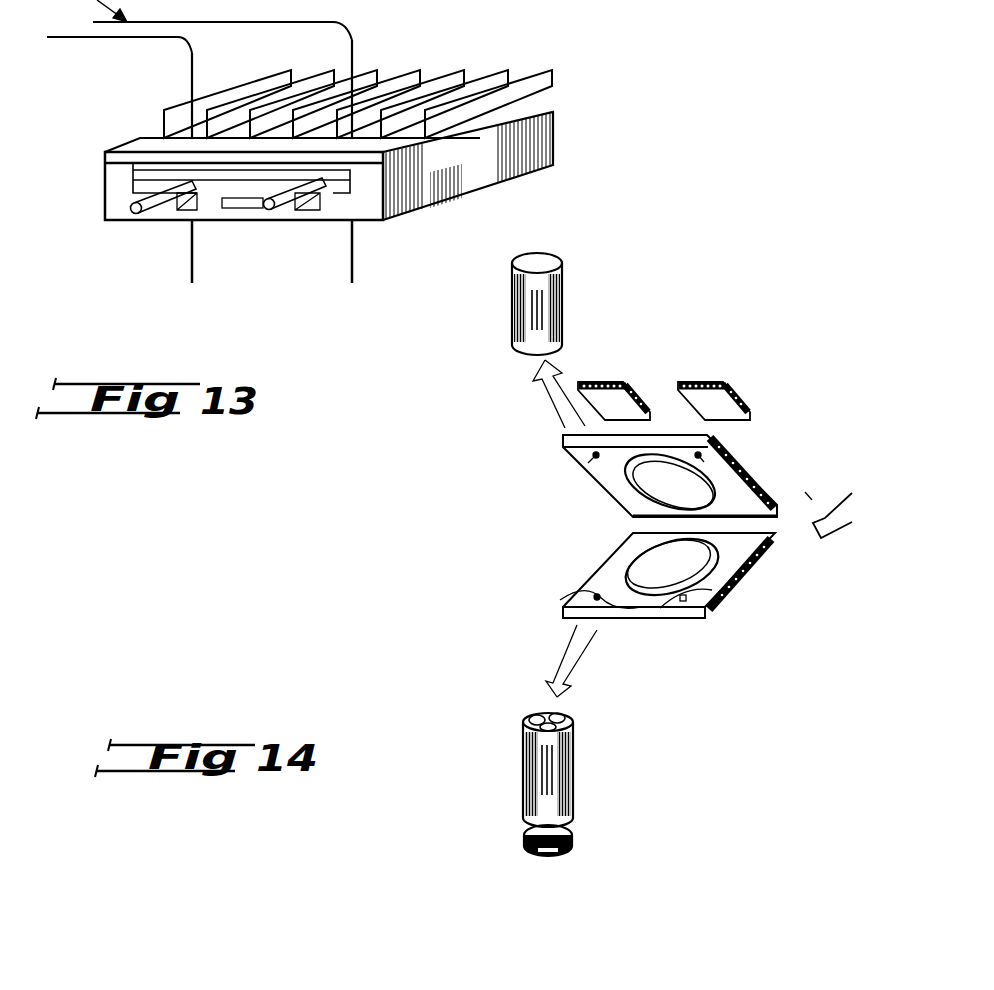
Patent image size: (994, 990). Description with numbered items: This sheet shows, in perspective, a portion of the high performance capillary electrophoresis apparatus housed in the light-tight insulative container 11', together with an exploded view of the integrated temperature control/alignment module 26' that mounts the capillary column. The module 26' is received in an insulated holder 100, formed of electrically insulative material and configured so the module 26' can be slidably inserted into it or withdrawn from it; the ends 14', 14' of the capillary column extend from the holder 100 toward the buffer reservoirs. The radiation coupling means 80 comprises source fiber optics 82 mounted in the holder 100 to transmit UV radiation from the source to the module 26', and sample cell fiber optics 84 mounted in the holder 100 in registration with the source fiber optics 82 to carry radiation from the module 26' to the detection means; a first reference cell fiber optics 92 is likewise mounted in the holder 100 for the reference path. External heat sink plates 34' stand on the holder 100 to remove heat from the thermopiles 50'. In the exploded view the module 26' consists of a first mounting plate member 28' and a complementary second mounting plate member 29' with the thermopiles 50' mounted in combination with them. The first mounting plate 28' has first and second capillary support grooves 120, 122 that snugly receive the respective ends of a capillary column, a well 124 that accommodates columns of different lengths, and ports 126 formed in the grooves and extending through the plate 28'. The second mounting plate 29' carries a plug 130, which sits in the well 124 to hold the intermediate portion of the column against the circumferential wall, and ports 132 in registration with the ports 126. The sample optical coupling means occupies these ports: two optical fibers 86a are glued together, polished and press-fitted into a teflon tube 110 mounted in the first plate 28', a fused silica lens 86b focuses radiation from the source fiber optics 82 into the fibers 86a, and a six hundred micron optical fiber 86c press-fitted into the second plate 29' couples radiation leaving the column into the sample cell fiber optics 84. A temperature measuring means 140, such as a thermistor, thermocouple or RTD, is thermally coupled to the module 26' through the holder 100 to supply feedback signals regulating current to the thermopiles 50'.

In FIG. 13, the light-tight insulative container 11' is at (367, 20).
In FIG. 13, the sample cell fiber optics 84 is at (80, 44).
In FIG. 13, the source fiber optics 82 is at (200, 266).
In FIG. 13, the first reference cell fiber optics 92 is at (360, 266).
In FIG. 13, the radiation coupling means 80 is at (163, 58).
In FIG. 13, the external heat sink plates 34' is at (462, 76).
In FIG. 13, the insulated holder 100 is at (104, 234).
In FIG. 13, the second mounting plate member 29' is at (304, 194).
In FIG. 14, the second mounting plate member 29' is at (613, 477).
In FIG. 13, the first mounting plate member 28' is at (287, 220).
In FIG. 14, the first mounting plate member 28' is at (677, 674).
In FIG. 13, the ends of capillary column 14' is at (229, 234).
In FIG. 14, the 600 micron optical fiber 86c is at (580, 296).
In FIG. 14, the thermopiles 50' is at (664, 350).
In FIG. 14, the plug 130 is at (650, 485).
In FIG. 14, the ports 132 is at (590, 459).
In FIG. 14, the first capillary support groove 120 is at (738, 616).
In FIG. 14, the second capillary support groove 122 is at (597, 597).
In FIG. 14, the well 124 is at (707, 562).
In FIG. 14, the ports 126 is at (683, 600).
In FIG. 14, the teflon tube 110 is at (573, 758).
In FIG. 14, the 100 micron optical fibers 86a is at (550, 720).
In FIG. 14, the fused silica lens 86b is at (592, 835).
In FIG. 14, the integrated temperature control/alignment module 26' is at (832, 435).
In FIG. 14, the temperature measuring means 140 is at (832, 489).